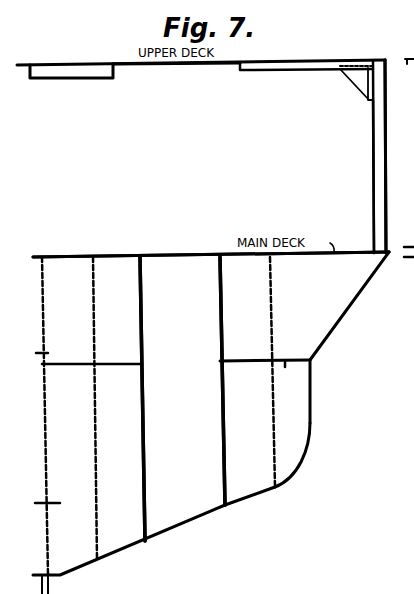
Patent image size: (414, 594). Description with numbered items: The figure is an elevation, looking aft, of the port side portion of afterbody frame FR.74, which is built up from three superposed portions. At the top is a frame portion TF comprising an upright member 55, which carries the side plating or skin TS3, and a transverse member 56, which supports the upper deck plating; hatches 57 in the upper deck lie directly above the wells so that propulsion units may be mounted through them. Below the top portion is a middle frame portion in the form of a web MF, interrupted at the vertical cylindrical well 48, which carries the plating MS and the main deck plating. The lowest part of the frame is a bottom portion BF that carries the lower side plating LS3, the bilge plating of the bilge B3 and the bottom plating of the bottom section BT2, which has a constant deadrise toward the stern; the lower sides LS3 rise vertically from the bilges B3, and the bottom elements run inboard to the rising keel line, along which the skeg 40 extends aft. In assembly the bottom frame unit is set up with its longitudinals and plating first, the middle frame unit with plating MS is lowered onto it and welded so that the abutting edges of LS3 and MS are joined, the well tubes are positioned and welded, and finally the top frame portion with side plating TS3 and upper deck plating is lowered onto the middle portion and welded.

The hatches 57 is at (176, 67).
The transverse member 56 is at (248, 71).
The top frame portion TF is at (352, 89).
The upright member 55 is at (371, 124).
The side plating TS3 is at (386, 171).
The vertical cylindrical well 48 is at (163, 268).
The plating MS is at (349, 306).
The middle frame portion web MF is at (214, 307).
The bottom frame portion BF is at (214, 397).
The lower side plating LS3 is at (313, 405).
The afterbody bilge B3 is at (297, 468).
The frame 74 FR.74 is at (248, 511).
The bottom section BT2 is at (120, 550).
The skeg 40 is at (61, 580).